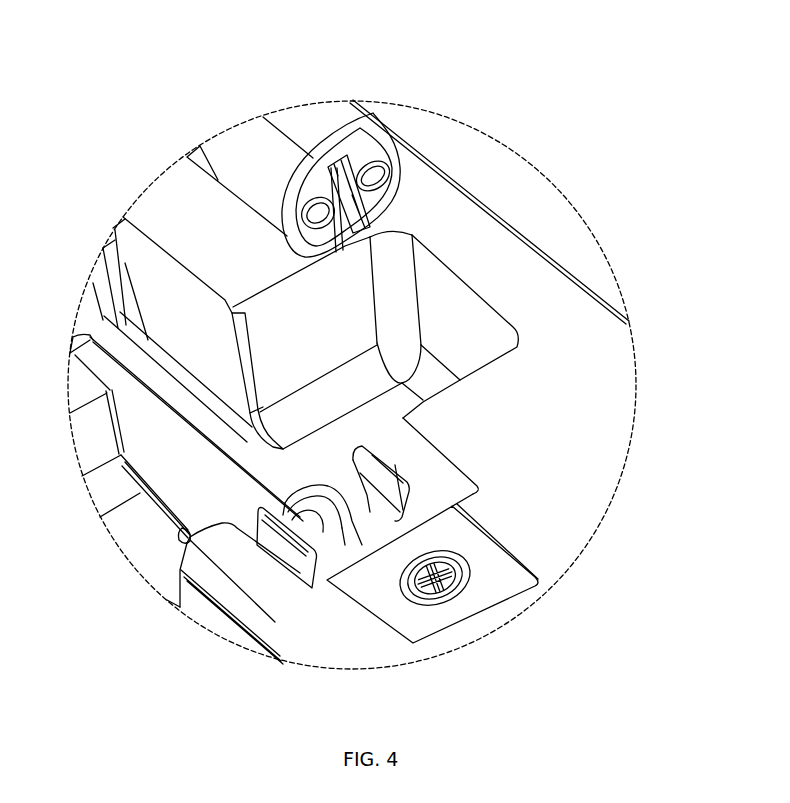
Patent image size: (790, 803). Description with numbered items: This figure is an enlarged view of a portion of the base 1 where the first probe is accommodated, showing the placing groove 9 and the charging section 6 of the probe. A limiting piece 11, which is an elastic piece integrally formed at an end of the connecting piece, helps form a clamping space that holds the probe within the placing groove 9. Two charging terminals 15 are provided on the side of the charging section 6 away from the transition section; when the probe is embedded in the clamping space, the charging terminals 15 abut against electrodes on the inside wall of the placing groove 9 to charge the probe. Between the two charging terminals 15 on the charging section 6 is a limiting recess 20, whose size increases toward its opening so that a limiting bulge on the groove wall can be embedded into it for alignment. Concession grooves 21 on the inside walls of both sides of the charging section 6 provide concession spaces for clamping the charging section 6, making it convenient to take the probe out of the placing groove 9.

The housing base 1 is at (574, 418).
The charging section 6 is at (248, 156).
The placing groove 9 is at (158, 297).
The limiting piece 11 is at (290, 566).
The charging terminal 15 is at (368, 177).
The limiting recess 20 is at (398, 172).
The concession groove 21 is at (470, 327).